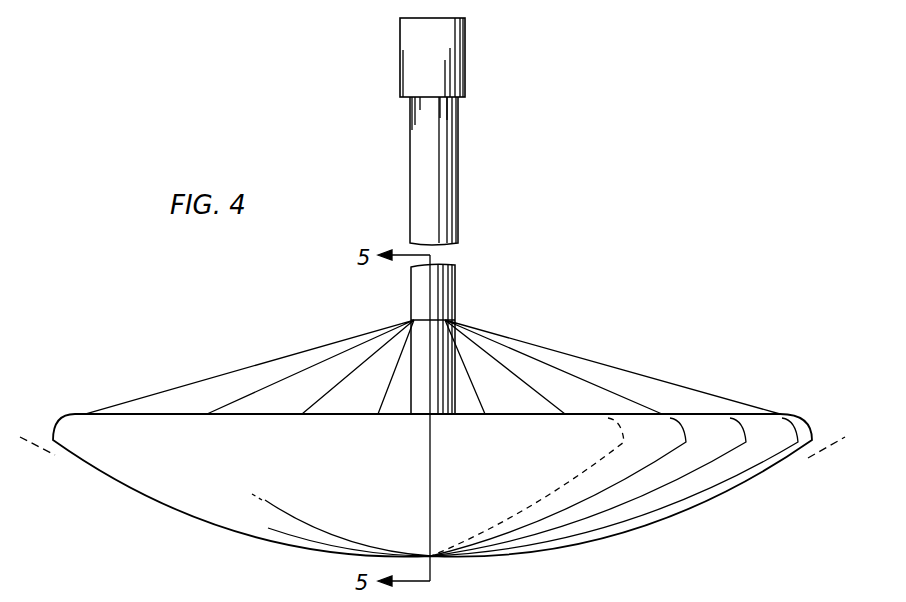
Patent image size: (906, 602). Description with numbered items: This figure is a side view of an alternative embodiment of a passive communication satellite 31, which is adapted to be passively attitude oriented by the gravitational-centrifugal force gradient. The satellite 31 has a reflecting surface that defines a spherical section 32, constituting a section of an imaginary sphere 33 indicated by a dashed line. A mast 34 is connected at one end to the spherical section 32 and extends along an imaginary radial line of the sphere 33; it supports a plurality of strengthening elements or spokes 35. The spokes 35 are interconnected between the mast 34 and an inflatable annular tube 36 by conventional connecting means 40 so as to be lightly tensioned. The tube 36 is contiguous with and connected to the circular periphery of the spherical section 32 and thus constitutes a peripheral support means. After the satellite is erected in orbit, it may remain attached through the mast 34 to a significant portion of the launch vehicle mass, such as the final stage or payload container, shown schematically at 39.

The passive communication satellite 31 is at (164, 513).
The spherical section 32 is at (258, 539).
The imaginary sphere 33 is at (829, 445).
The mast 34 is at (456, 197).
The spokes 35 is at (497, 342).
The inflatable annular tube 36 is at (60, 425).
The launch vehicle portion 39 is at (401, 50).
The connecting means 40 is at (438, 318).